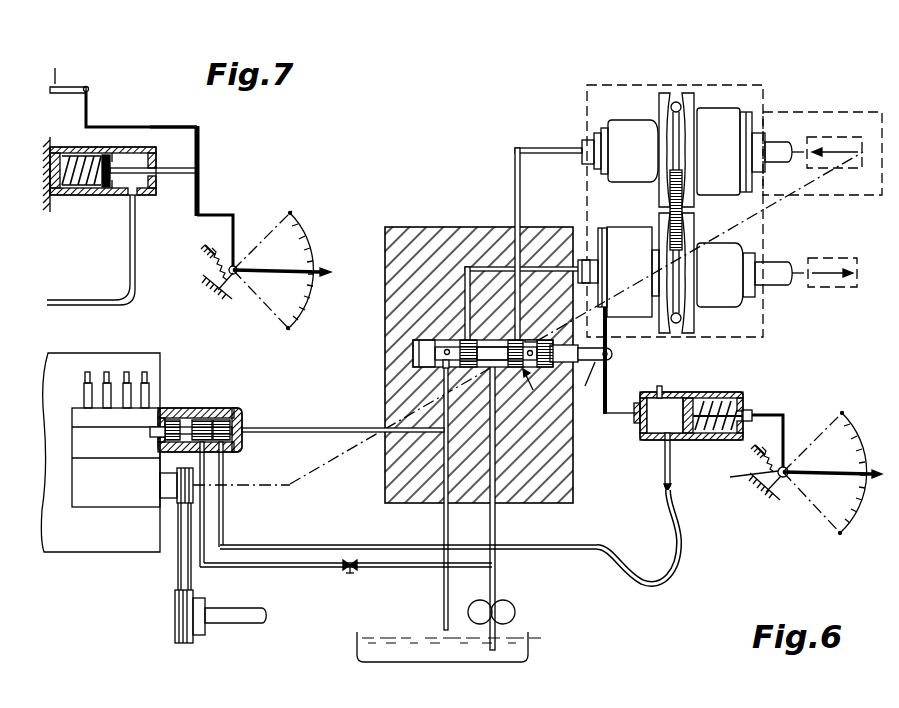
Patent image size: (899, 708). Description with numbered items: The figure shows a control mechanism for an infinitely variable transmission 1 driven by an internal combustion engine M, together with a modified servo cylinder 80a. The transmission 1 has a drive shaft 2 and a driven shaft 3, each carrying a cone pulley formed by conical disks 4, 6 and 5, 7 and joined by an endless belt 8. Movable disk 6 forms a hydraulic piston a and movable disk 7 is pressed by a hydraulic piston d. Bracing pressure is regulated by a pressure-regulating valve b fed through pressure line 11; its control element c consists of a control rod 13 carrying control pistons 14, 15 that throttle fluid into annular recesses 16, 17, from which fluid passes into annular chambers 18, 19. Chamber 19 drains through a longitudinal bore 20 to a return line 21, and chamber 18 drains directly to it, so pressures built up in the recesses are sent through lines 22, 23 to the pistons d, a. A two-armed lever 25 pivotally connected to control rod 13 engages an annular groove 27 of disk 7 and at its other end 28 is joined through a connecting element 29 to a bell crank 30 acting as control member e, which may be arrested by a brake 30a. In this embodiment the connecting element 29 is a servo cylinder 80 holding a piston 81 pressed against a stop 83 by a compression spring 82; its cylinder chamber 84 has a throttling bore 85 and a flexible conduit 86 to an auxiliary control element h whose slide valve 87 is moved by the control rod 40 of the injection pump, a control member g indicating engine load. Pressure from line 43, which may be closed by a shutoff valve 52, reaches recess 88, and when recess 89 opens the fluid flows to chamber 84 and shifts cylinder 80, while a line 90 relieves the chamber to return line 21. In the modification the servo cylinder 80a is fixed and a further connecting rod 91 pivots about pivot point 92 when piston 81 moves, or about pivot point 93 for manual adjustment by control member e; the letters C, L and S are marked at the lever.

In FIG. 6, the infinitely variable transmission 1 is at (743, 95).
In FIG. 6, the drive shaft 2 is at (781, 148).
In FIG. 6, the driven shaft 3 is at (776, 267).
In FIG. 6, the conical disk 4 is at (662, 97).
In FIG. 6, the conical disk 5 is at (688, 334).
In FIG. 6, the conical disk 6 is at (687, 97).
In FIG. 6, the conical disk 7 is at (663, 334).
In FIG. 6, the endless belt 8 is at (675, 101).
In FIG. 6, the pressure line 11 is at (494, 483).
In FIG. 7, the control rod 13 is at (62, 95).
In FIG. 6, the control rod 13 is at (566, 345).
In FIG. 6, the control piston 14 is at (471, 338).
In FIG. 6, the control piston 15 is at (512, 338).
In FIG. 6, the annular recess 16 is at (460, 337).
In FIG. 6, the annular recess 17 is at (520, 338).
In FIG. 6, the annular chamber 18 is at (445, 338).
In FIG. 6, the annular chamber 19 is at (540, 338).
In FIG. 6, the longitudinal bore 20 is at (497, 368).
In FIG. 6, the return line 21 is at (443, 517).
In FIG. 6, the line 22 is at (463, 280).
In FIG. 6, the line 23 is at (514, 163).
In FIG. 7, the two-armed lever 25 is at (88, 112).
In FIG. 6, the two-armed lever 25 is at (611, 396).
In FIG. 6, the annular groove 27 is at (606, 227).
In FIG. 6, the lever end 28 is at (604, 416).
In FIG. 7, the connecting rod 29 is at (158, 125).
In FIG. 6, the connecting rod 29 is at (770, 406).
In FIG. 7, the bell crank 30 is at (243, 226).
In FIG. 6, the bell crank 30 is at (789, 425).
In FIG. 6, the brake 30a is at (739, 478).
In FIG. 6, the control rod of the fuel injection pump 40 is at (152, 432).
In FIG. 6, the pressure line 43 is at (404, 568).
In FIG. 6, the shutoff valve 52 is at (347, 573).
In FIG. 6, the servo cylinder 80 is at (713, 397).
In FIG. 7, the servo cylinder 80a is at (80, 195).
In FIG. 7, the piston 81 is at (107, 190).
In FIG. 6, the piston 81 is at (683, 410).
In FIG. 6, the compression spring 82 is at (743, 408).
In FIG. 6, the stop 83 is at (687, 399).
In FIG. 6, the cylinder chamber 84 is at (646, 427).
In FIG. 6, the throttling bore 85 is at (658, 393).
In FIG. 7, the flexible conduit 86 is at (133, 236).
In FIG. 6, the flexible conduit 86 is at (674, 572).
In FIG. 6, the slide valve 87 is at (200, 419).
In FIG. 6, the annular recess 88 is at (190, 453).
In FIG. 6, the annular recess 89 is at (227, 412).
In FIG. 6, the line 90 is at (292, 427).
In FIG. 7, the connecting rod 91 is at (200, 145).
In FIG. 7, the pivot point 92 is at (207, 213).
In FIG. 7, the pivot point 93 is at (198, 172).
In FIG. 6, the hydraulic piston a is at (722, 118).
In FIG. 6, the pressure-regulating valve b is at (537, 389).
In FIG. 6, the control element c is at (587, 382).
In FIG. 6, the hydraulic piston d is at (634, 296).
In FIG. 7, the control member e is at (275, 269).
In FIG. 6, the control member e is at (823, 470).
In FIG. 6, the control member g is at (165, 418).
In FIG. 6, the auxiliary control element h is at (216, 404).
In FIG. 7, the control lever C is at (57, 68).
In FIG. 7, the lever position L is at (269, 307).
In FIG. 6, the lever position L is at (821, 438).
In FIG. 7, the lever position S is at (269, 233).
In FIG. 6, the lever position S is at (821, 511).
In FIG. 6, the internal combustion engine M is at (100, 452).